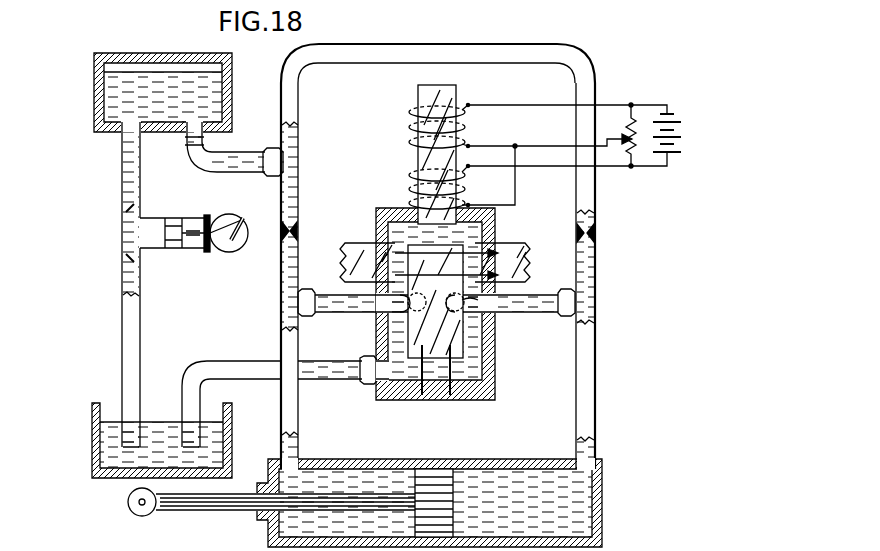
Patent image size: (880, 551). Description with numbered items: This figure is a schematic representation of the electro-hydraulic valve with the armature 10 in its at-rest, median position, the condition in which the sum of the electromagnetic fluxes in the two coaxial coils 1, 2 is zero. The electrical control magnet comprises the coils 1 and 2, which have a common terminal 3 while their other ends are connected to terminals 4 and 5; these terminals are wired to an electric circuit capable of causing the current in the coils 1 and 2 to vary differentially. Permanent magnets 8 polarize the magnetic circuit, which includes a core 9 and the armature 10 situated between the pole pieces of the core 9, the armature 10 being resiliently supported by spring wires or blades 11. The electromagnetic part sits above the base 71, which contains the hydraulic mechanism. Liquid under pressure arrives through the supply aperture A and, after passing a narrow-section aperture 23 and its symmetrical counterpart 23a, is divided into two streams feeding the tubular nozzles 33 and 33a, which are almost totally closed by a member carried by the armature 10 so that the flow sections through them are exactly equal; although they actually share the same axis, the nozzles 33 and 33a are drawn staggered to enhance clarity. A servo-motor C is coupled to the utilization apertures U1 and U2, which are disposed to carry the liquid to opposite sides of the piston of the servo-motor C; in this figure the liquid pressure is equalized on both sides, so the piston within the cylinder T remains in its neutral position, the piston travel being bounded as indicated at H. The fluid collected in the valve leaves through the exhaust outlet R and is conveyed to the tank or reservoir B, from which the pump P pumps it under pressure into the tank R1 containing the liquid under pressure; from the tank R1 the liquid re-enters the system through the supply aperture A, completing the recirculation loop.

The coaxial coil 1 is at (418, 113).
The coaxial coil 2 is at (418, 176).
The common terminal 3 is at (557, 147).
The terminal 4 is at (557, 105).
The terminal 5 is at (557, 167).
The core 9 is at (428, 206).
The permanent magnet 8 is at (350, 241).
The base 71 is at (496, 228).
The armature 10 is at (453, 335).
The tubular nozzle 33 is at (388, 301).
The tubular nozzle 33a is at (493, 308).
The narrow-section aperture 23 is at (284, 231).
The restriction in right leg 23a is at (597, 238).
The stop pin H is at (420, 367).
The spring wire or blade 11 is at (458, 368).
The supply aperture A is at (245, 158).
The tank or reservoir B is at (100, 405).
The tank R1 is at (116, 57).
The exhaust outlet R is at (233, 366).
The pump P is at (194, 252).
The utilization aperture U1 is at (298, 408).
The utilization aperture U2 is at (594, 412).
The cylinder T is at (444, 483).
The servo-motor C is at (415, 462).